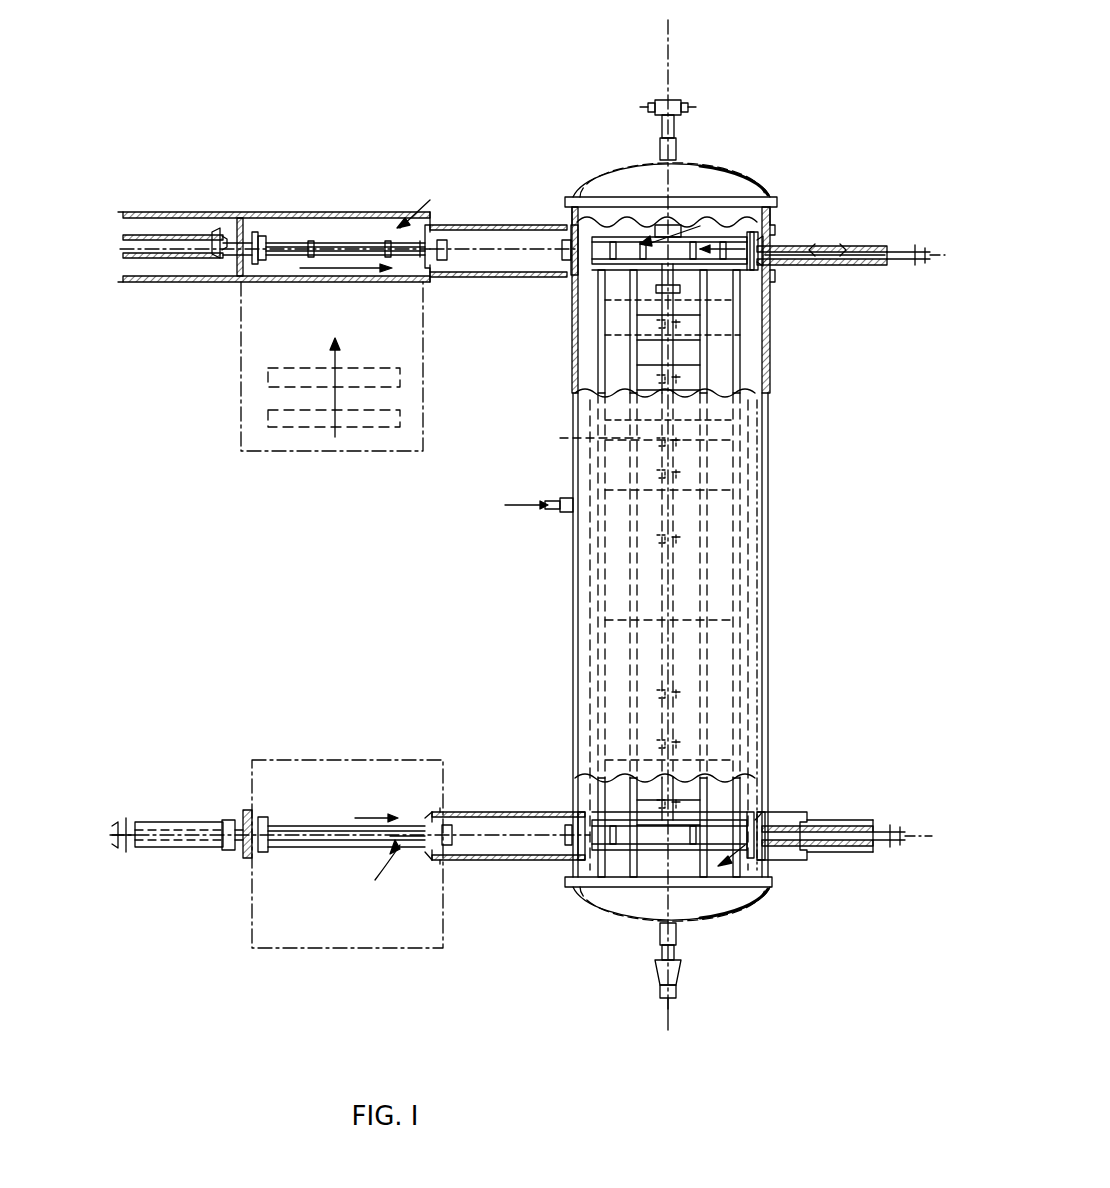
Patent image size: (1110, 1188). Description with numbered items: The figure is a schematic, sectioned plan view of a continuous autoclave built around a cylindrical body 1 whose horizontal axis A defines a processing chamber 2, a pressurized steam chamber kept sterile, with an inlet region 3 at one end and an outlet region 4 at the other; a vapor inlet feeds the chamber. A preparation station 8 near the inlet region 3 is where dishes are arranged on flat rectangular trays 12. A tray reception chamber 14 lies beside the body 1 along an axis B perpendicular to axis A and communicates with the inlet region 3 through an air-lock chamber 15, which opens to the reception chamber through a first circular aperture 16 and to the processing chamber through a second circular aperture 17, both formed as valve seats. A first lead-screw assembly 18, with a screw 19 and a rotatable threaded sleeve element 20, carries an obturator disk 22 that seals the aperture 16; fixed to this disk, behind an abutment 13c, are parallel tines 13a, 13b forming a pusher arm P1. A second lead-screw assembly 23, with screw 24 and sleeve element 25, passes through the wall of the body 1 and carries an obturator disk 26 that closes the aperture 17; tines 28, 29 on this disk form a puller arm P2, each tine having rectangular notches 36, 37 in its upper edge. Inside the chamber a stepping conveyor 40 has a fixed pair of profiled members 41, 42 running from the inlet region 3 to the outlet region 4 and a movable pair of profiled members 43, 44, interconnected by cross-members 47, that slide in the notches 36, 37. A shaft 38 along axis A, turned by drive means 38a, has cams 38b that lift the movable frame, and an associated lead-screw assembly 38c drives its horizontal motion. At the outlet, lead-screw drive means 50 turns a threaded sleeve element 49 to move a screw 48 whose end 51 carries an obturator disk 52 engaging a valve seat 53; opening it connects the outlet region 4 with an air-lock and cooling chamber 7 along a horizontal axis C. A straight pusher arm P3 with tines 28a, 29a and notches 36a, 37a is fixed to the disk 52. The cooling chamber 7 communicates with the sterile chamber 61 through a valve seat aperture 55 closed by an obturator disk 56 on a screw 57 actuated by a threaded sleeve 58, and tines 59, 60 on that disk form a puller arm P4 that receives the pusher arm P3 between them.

The cylindrical body 1 is at (765, 595).
The processing chamber 2 is at (758, 312).
The inlet region 3 is at (605, 180).
The outlet region 4 is at (630, 870).
The air-lock and cooling chamber 7 is at (508, 860).
The preparation station 8 is at (235, 405).
The tray 12 is at (365, 375).
The tine 13a is at (320, 243).
The tine 13b is at (340, 243).
The abutment 13c is at (265, 235).
The tray reception chamber 14 is at (320, 282).
The air-lock chamber 15 is at (470, 272).
The first circular aperture 16 is at (442, 235).
The second circular aperture 17 is at (560, 230).
The first lead-screw assembly 18 is at (165, 220).
The screw 19 is at (175, 270).
The rotatable threaded sleeve element 20 is at (195, 232).
The obturator disk 22 is at (245, 232).
The second lead-screw assembly 23 is at (880, 245).
The screw 24 is at (860, 262).
The rotatable threaded sleeve element 25 is at (840, 250).
The obturator disk 26 is at (770, 240).
The tine 28 is at (610, 230).
The tine 28a is at (600, 835).
The tine 29 is at (720, 240).
The tine 29a is at (615, 860).
The notch 36 is at (640, 230).
The notch 36a is at (690, 870).
The notch 37 is at (735, 275).
The notch 37a is at (650, 860).
The shaft 38 is at (673, 362).
The drive means 38a is at (676, 132).
The cam 38b is at (565, 438).
The lead-screw assembly 38c is at (626, 1017).
The stepping conveyor 40 is at (745, 370).
The fixed profiled member 41 is at (598, 312).
The fixed profiled member 42 is at (740, 338).
The movable profiled member 43 is at (630, 350).
The movable profiled member 44 is at (750, 528).
The cross-member 47 is at (640, 382).
The screw 48 is at (830, 860).
The rotatable threaded sleeve element 49 is at (880, 828).
The lead-screw drive means 50 is at (858, 862).
The end of screw 51 is at (760, 815).
The obturator disk 52 is at (745, 870).
The valve seat 53 is at (562, 835).
The valve seat aperture 55 is at (440, 850).
The obturator disk 56 is at (262, 818).
The screw 57 is at (205, 838).
The threaded sleeve 58 is at (172, 820).
The tine 59 is at (300, 826).
The tine 60 is at (310, 848).
The sterile chamber 61 is at (368, 755).
The horizontal axis A is at (668, 20).
The axis B is at (500, 250).
The horizontal axis C is at (490, 835).
The pusher arm P1 is at (430, 200).
The puller arm P2 is at (700, 226).
The pusher arm P3 is at (740, 870).
The puller arm P4 is at (375, 880).
The vapor inlet vapor is at (514, 494).